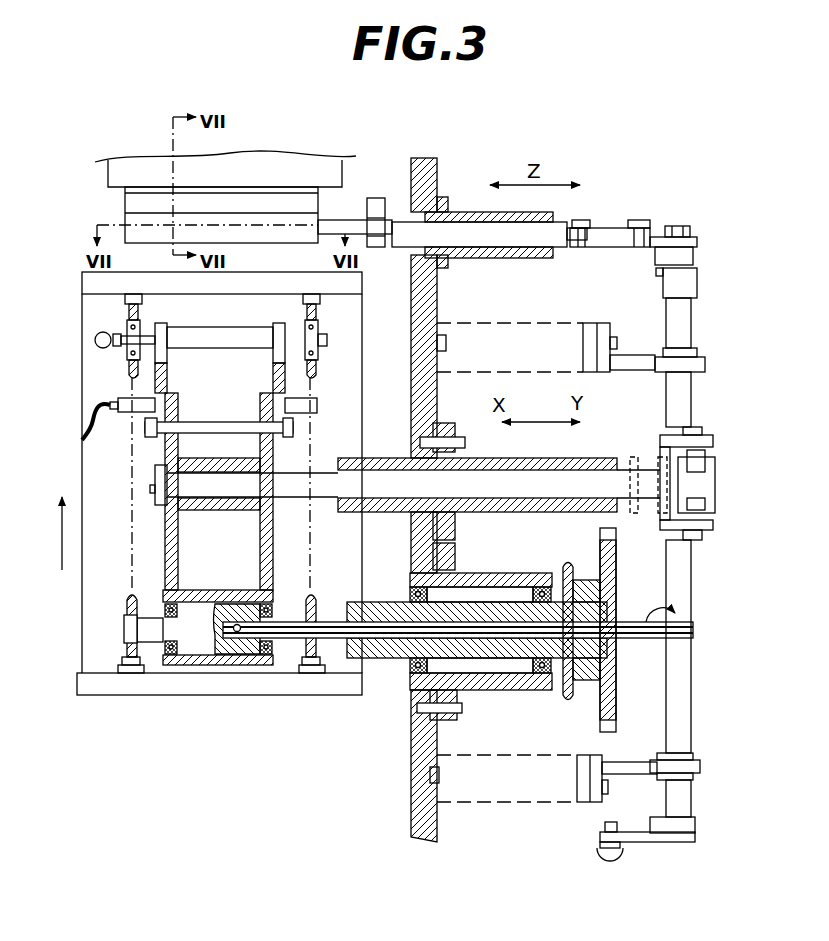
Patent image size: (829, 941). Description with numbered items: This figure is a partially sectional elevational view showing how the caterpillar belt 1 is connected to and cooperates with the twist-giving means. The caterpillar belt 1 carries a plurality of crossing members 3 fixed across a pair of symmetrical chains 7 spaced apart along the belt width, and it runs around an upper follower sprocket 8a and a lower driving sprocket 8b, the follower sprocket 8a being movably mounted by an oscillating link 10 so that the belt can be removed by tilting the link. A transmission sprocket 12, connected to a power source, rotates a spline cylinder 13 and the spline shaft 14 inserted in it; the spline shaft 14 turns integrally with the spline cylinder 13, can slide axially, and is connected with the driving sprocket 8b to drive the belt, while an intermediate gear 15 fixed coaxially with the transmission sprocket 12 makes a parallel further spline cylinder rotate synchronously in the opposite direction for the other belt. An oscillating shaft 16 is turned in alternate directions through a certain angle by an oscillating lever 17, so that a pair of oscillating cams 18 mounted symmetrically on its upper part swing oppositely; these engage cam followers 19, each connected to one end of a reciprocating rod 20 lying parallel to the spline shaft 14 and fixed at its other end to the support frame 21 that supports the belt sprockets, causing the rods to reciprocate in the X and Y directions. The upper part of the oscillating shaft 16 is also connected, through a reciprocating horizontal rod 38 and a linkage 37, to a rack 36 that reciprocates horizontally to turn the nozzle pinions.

The caterpillar belt 1 is at (80, 440).
The crossing member 3 is at (88, 280).
The chain 7 is at (131, 485).
The follower sprocket 8a is at (128, 367).
The driving sprocket 8b is at (126, 613).
The oscillating link 10 is at (167, 365).
The transmission sprocket 12 is at (562, 585).
The spline cylinder 13 is at (488, 612).
The spline shaft 14 is at (513, 650).
The intermediate gear 15 is at (614, 594).
The oscillating shaft 16 is at (678, 698).
The oscillating lever 17 is at (672, 838).
The oscillating cam 18 is at (697, 458).
The cam follower 19 is at (634, 457).
The reciprocating rod 20 is at (530, 476).
The support frame 21 is at (171, 540).
The rack 36 is at (347, 222).
The linkage 37 is at (604, 225).
The reciprocating horizontal rod 38 is at (494, 238).